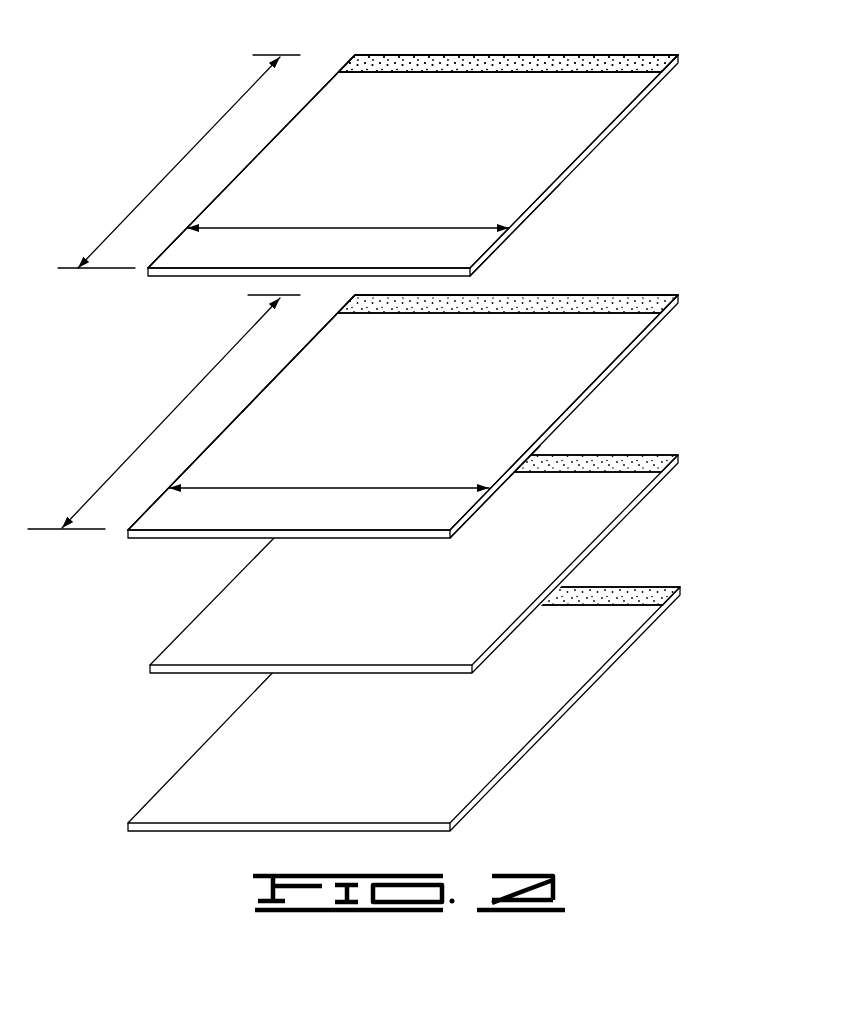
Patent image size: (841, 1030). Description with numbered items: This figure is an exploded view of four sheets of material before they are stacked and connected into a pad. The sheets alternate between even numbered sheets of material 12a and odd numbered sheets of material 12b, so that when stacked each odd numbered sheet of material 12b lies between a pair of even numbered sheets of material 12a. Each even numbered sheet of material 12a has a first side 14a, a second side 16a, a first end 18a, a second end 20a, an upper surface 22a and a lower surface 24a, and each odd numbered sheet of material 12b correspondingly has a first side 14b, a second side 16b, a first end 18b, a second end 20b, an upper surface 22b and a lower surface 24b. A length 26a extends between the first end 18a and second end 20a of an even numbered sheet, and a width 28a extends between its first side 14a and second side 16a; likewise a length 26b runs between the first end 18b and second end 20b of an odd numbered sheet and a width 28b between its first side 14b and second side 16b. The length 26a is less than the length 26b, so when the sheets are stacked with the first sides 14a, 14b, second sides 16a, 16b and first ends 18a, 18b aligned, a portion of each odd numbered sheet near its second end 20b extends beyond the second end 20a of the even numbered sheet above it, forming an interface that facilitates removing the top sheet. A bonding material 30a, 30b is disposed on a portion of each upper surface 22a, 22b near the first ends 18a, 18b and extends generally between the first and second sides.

The even numbered sheet of material 12a is at (558, 145).
The odd numbered sheet of material 12b is at (580, 375).
The first side of even numbered sheet 14a is at (262, 150).
The first side of odd numbered sheet 14b is at (278, 362).
The second side of even numbered sheet 16a is at (565, 178).
The second side of odd numbered sheet 16b is at (585, 398).
The first end of even numbered sheet 18a is at (452, 55).
The first end of odd numbered sheet 18b is at (512, 292).
The second end of even numbered sheet 20a is at (240, 280).
The second end of odd numbered sheet 20b is at (215, 537).
The upper surface of even numbered sheet 22a is at (190, 248).
The upper surface of odd numbered sheet 22b is at (215, 442).
The lower surface of even numbered sheet 24a is at (496, 248).
The lower surface of odd numbered sheet 24b is at (540, 445).
The length of even numbered sheet 26a is at (196, 146).
The length of odd numbered sheet 26b is at (205, 382).
The width of even numbered sheet 28a is at (318, 228).
The width of odd numbered sheet 28b is at (318, 488).
The bonding material of even numbered sheet 30a is at (590, 62).
The bonding material of odd numbered sheet 30b is at (605, 300).